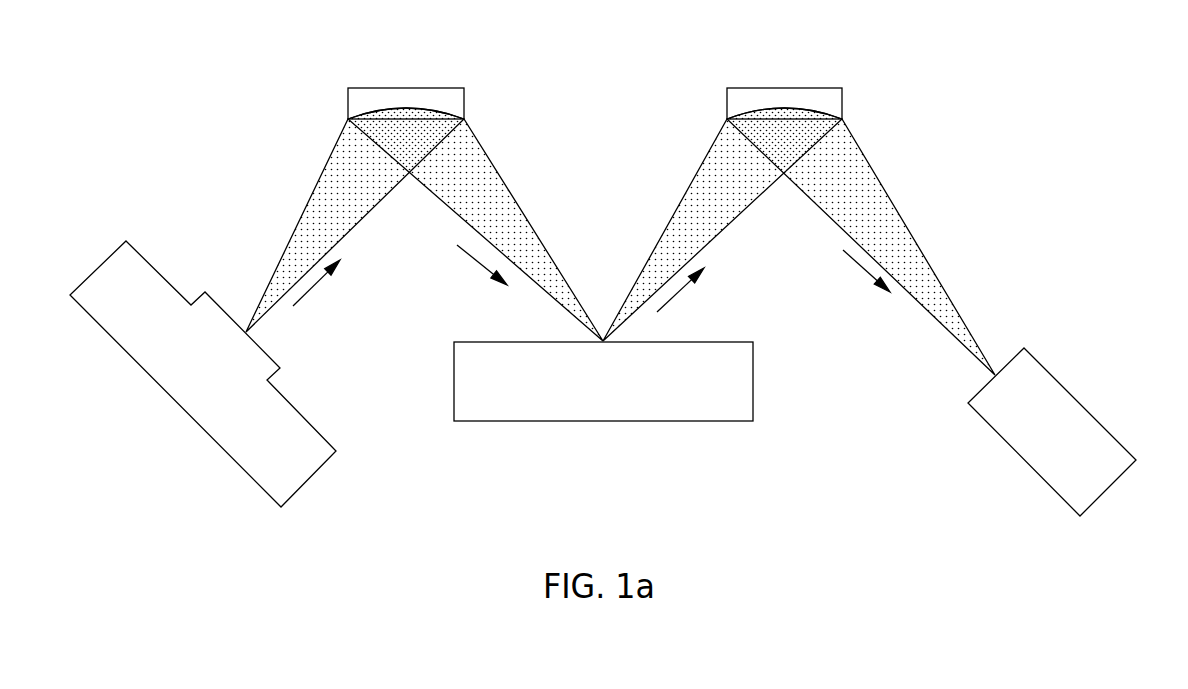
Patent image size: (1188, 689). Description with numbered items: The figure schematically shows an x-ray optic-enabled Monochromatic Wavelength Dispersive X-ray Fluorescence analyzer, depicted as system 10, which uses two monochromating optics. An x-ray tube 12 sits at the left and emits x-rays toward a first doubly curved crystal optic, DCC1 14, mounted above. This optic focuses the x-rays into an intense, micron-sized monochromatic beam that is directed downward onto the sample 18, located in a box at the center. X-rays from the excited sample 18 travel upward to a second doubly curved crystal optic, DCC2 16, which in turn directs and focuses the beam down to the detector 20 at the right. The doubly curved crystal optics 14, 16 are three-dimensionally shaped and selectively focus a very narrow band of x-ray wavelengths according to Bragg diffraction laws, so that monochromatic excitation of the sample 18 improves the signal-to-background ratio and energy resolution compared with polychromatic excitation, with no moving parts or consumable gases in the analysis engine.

The system 10 is at (121, 117).
The tube 12 is at (128, 356).
The doubly curved crystal optic (DCC1) 14 is at (465, 102).
The doubly curved crystal optic (DCC2) 16 is at (842, 103).
The sample 18 is at (606, 421).
The detector 20 is at (1095, 419).